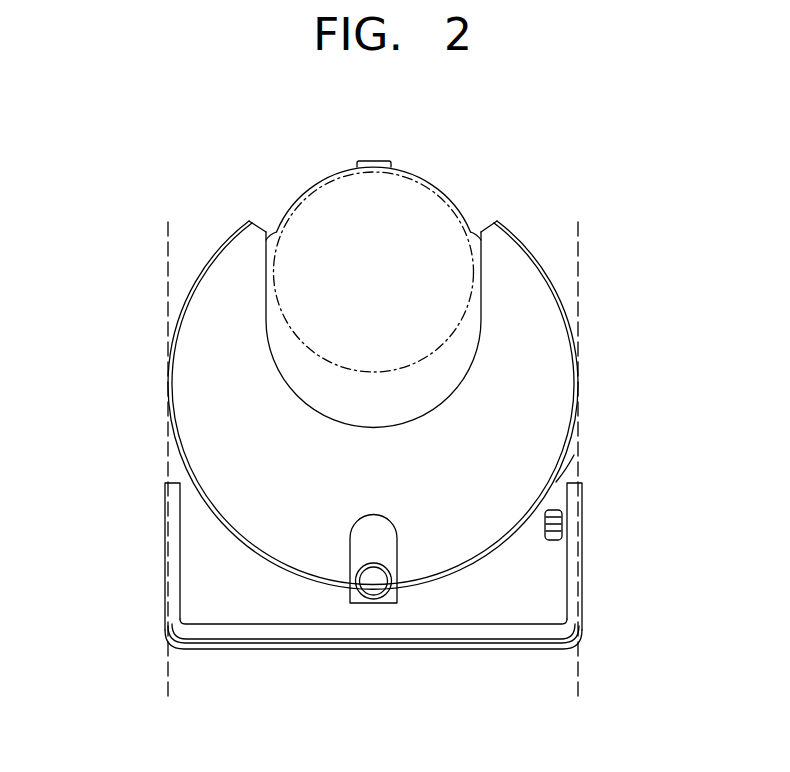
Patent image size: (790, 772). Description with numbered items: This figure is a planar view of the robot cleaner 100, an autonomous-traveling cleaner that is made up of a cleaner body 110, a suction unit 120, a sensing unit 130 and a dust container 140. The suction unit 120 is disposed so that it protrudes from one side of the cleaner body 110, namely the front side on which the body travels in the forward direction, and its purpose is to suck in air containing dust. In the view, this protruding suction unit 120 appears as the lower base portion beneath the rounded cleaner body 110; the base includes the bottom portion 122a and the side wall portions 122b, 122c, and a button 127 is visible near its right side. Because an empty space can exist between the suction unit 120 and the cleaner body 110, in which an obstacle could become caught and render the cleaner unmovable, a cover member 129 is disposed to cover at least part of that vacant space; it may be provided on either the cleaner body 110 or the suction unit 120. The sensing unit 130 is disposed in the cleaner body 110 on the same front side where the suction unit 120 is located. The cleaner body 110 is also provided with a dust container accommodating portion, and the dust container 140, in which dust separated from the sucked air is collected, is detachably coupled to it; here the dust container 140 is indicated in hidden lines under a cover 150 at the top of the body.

The robot cleaner 100 is at (186, 148).
The cleaner body 110 is at (548, 378).
The suction unit 120 is at (525, 590).
The base bottom portion 122a is at (477, 648).
The base right side wall 122b is at (582, 550).
The base left side wall 122c is at (165, 552).
The button 127 is at (561, 513).
The cover member 129 is at (560, 476).
The sensing unit 130 is at (363, 548).
The dust container 140 is at (437, 193).
The cover 150 is at (320, 180).